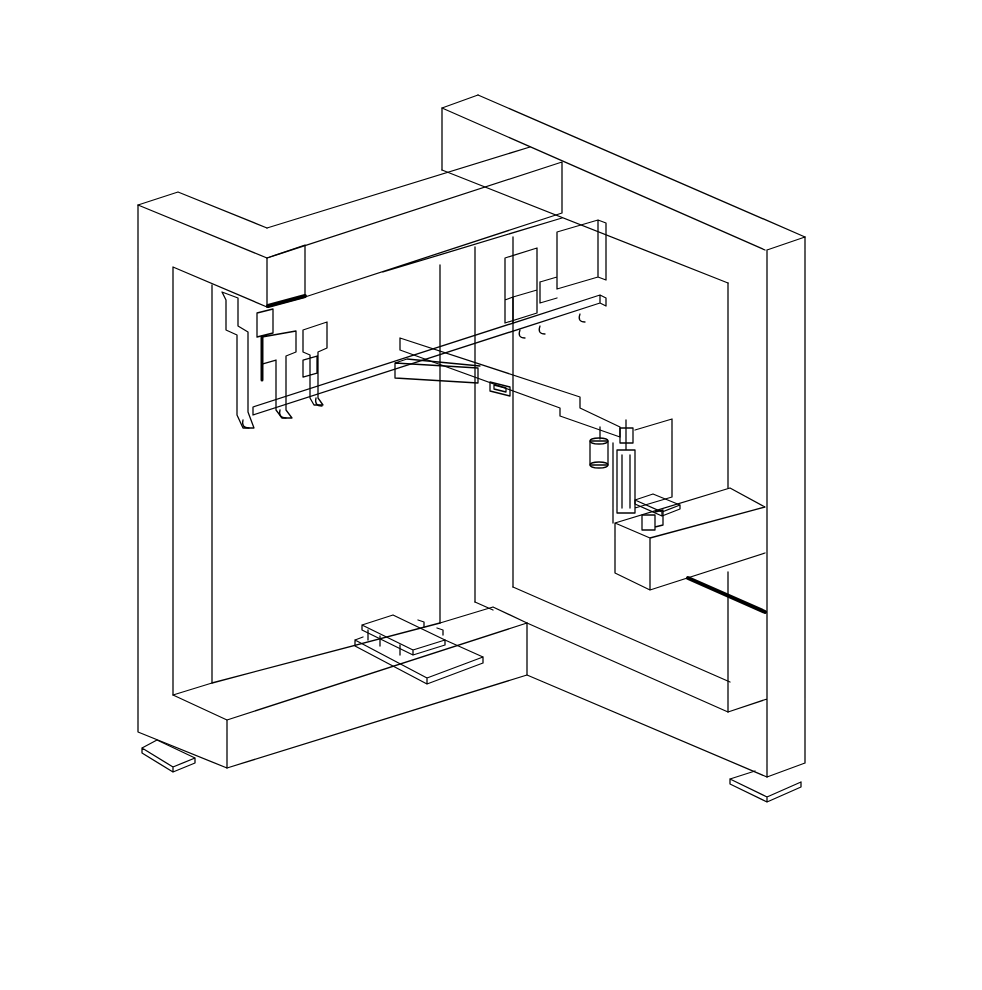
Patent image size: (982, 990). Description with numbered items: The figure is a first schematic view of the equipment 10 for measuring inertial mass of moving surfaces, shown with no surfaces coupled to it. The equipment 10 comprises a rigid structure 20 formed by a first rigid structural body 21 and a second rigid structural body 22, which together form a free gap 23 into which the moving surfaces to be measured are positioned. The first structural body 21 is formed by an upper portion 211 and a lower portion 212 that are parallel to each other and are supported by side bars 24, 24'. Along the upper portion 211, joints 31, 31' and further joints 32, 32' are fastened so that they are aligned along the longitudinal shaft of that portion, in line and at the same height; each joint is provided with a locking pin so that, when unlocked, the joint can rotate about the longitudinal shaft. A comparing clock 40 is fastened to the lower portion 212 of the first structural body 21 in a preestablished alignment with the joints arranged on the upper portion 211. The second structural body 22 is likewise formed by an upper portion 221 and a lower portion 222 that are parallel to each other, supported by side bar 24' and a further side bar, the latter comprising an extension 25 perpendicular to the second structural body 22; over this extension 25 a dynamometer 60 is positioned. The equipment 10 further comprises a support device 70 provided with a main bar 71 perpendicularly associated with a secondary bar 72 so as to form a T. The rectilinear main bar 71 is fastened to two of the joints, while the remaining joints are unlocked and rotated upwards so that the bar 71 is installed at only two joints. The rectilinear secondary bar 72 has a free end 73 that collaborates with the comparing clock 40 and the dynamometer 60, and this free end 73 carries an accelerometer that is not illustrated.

The equipment for measuring inertial mass of moving surfaces 10 is at (286, 118).
The rigid structure 20 is at (274, 772).
The first rigid structural body 21 is at (357, 207).
The upper portion 211 is at (278, 243).
The lower portion 212 is at (362, 712).
The second rigid structural body 22 is at (633, 185).
The upper portion 221 is at (500, 112).
The lower portion 222 is at (702, 728).
The free gap 23 is at (533, 729).
The side bar 24 is at (154, 482).
The side bar 24' is at (517, 430).
The extension 25 is at (710, 508).
The joint 31 is at (175, 360).
The joint 31' is at (280, 389).
The joint 32 is at (498, 278).
The joint 32' is at (597, 199).
The comparing clock 40 is at (405, 623).
The dynamometer 60 is at (645, 462).
The support device 70 is at (413, 373).
The main bar 71 is at (443, 348).
The secondary bar 72 is at (550, 380).
The free end 73 is at (618, 410).